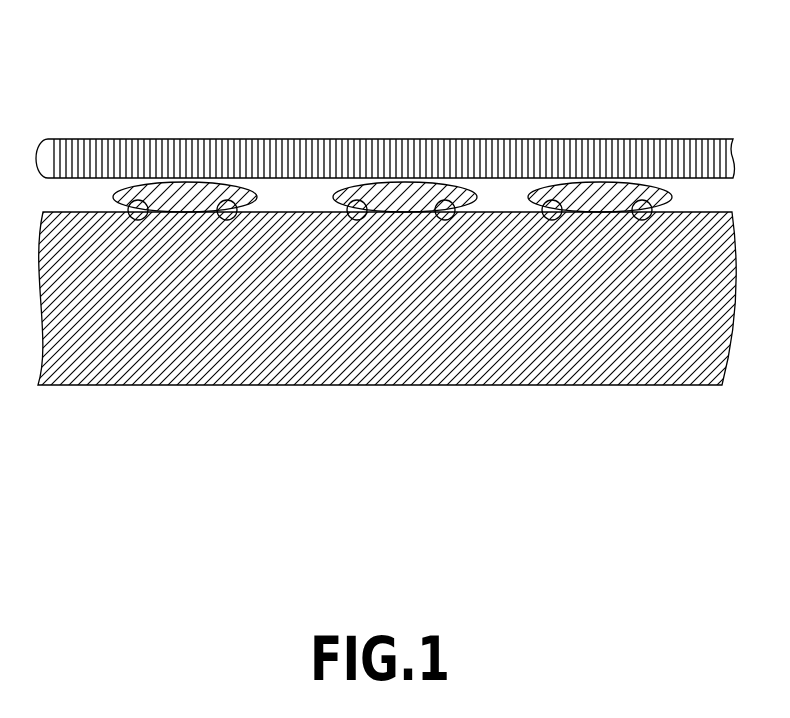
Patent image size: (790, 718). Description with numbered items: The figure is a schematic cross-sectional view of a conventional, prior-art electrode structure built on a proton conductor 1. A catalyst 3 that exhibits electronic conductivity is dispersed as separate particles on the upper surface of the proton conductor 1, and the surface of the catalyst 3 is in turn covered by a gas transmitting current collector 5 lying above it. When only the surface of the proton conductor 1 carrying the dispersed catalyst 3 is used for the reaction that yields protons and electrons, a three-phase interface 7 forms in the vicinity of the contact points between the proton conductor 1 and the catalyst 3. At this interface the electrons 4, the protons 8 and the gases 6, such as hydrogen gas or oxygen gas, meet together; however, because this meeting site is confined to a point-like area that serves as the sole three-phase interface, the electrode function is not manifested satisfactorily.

The proton conductor 1 is at (532, 362).
The catalyst 3 is at (188, 192).
The electrons 4 is at (352, 195).
The gas transmitting current collector 5 is at (58, 152).
The gases 6 is at (325, 195).
The three-phase interface 7 is at (137, 204).
The protons 8 is at (352, 232).